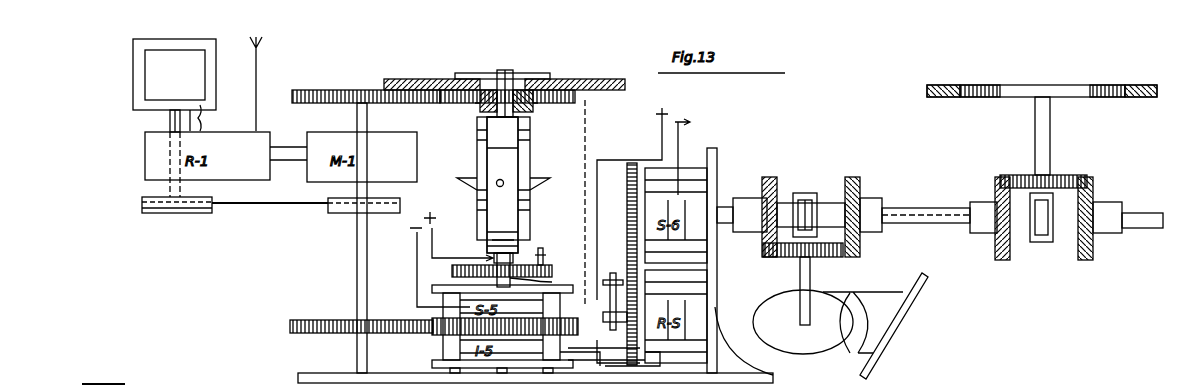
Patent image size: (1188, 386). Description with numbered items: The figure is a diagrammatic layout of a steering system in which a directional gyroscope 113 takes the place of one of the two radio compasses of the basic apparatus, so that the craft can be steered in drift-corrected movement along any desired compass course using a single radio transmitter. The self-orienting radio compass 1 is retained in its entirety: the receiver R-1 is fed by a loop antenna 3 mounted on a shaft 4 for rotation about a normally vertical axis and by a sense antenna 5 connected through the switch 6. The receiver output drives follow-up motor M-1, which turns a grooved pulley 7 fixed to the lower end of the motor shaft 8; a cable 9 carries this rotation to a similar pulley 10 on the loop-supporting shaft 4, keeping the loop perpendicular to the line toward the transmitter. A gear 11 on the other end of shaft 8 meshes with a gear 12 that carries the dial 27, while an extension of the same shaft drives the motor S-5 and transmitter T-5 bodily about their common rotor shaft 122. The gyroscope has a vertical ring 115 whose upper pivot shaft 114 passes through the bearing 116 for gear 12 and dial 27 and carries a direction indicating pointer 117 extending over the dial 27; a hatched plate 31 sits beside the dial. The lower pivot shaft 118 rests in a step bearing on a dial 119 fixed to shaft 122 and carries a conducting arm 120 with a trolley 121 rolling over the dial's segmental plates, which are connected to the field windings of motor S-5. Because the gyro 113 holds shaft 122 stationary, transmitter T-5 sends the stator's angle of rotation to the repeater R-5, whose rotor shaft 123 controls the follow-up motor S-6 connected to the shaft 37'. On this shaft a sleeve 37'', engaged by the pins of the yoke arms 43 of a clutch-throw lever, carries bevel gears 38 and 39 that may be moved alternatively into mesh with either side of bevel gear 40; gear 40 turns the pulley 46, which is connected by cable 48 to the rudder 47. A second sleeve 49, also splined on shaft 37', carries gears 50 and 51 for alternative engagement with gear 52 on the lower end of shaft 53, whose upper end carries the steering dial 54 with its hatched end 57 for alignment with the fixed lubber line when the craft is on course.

The compass 1 is at (129, 131).
The loop antenna 3 is at (206, 68).
The shaft 4 is at (170, 113).
The sense antenna 5 is at (263, 49).
The switch 6 is at (256, 70).
The grooved pulley 7 is at (332, 208).
The motor shaft 8 is at (357, 118).
The cable 9 is at (245, 212).
The pulley 10 is at (145, 202).
The gear 11 is at (325, 90).
The gear 12 is at (578, 96).
The dial 27 is at (578, 78).
The plate 31 is at (398, 80).
The shaft 37' is at (926, 205).
The sleeve 37'' is at (809, 201).
The bevel gear 38 is at (762, 244).
The bevel gear 39 is at (862, 247).
The bevel gear 40 is at (820, 258).
The yoke arms 43 is at (807, 193).
The pulley 46 is at (780, 305).
The rudder 47 is at (899, 329).
The cable 48 is at (863, 322).
The second sleeve 49 is at (1098, 202).
The gear 50 is at (995, 247).
The gear 51 is at (1095, 248).
The gear 52 is at (1022, 176).
The shaft 53 is at (1052, 140).
The steering dial 54 is at (1040, 86).
The plate end 57 is at (1130, 86).
The directional gyroscope 113 is at (540, 156).
The pivot shaft 114 is at (513, 72).
The vertical ring 115 is at (490, 153).
The bearing 116 is at (481, 105).
The direction indicating pointer 117 is at (496, 70).
The lower pivot shaft 118 is at (515, 255).
The dial 119 is at (452, 272).
The conducting arm 120 is at (488, 260).
The trolley 121 is at (546, 258).
The shaft 122 is at (546, 281).
The rotor shaft 123 is at (612, 322).